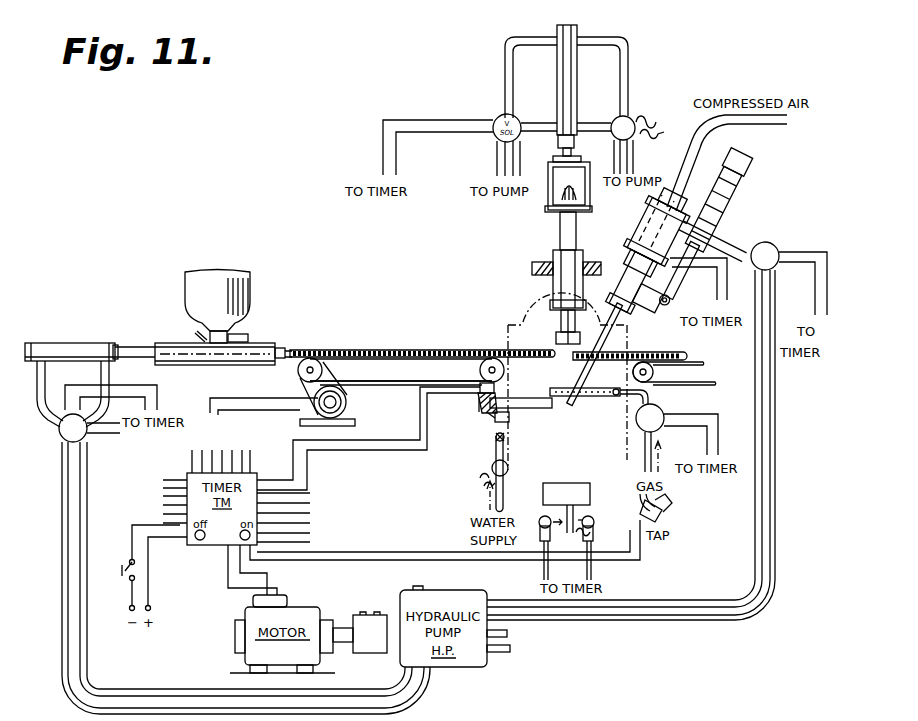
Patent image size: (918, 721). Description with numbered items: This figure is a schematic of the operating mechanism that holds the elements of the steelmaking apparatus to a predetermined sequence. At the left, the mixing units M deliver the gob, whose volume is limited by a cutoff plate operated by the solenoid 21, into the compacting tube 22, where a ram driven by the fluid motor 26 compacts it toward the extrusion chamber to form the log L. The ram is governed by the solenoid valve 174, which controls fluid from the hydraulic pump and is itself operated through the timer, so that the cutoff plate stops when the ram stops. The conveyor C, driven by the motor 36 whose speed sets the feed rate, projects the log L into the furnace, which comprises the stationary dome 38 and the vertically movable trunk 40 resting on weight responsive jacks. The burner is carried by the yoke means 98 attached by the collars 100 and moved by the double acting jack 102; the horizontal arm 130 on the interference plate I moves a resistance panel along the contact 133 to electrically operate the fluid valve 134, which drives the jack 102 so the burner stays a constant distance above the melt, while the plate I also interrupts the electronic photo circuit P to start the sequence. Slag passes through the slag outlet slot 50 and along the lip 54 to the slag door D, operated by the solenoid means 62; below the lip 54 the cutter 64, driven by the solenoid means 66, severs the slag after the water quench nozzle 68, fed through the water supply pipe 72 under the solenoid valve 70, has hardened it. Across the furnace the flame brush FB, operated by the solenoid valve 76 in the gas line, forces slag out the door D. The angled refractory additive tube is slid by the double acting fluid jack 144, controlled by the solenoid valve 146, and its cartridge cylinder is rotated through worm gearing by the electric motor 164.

The double acting jack 102 is at (575, 98).
The fluid valve 134 is at (628, 117).
The yoke means 98 is at (592, 175).
The collars 100 is at (553, 215).
The dome 38 is at (530, 318).
The log L is at (320, 350).
The motor 36 is at (347, 400).
The conveyor system C is at (395, 383).
The lip 54 is at (493, 392).
The slag outlet slot 50 is at (517, 400).
The solenoid means 62 is at (478, 396).
The slag door D is at (474, 414).
The cutter 64 is at (492, 418).
The solenoid means 66 is at (510, 420).
The water supply pipe 72 is at (504, 490).
The solenoid valve 70 is at (508, 468).
The water quench nozzle 68 is at (497, 440).
The horizontal arm 130 is at (581, 508).
The interference plate I is at (560, 515).
The electronic photo circuit P is at (597, 536).
The contact 133 is at (590, 515).
The fluid motor 26 is at (80, 343).
The solenoid valve 174 is at (60, 437).
The mixing units M is at (250, 292).
The solenoid 21 is at (233, 334).
The compacting tube 22 is at (262, 345).
The trunk 40 is at (627, 345).
The flame brush FB is at (607, 397).
The solenoid valve 76 is at (660, 410).
The electric motor 164 is at (694, 230).
The double acting fluid jack 144 is at (730, 200).
The solenoid valve 146 is at (779, 250).